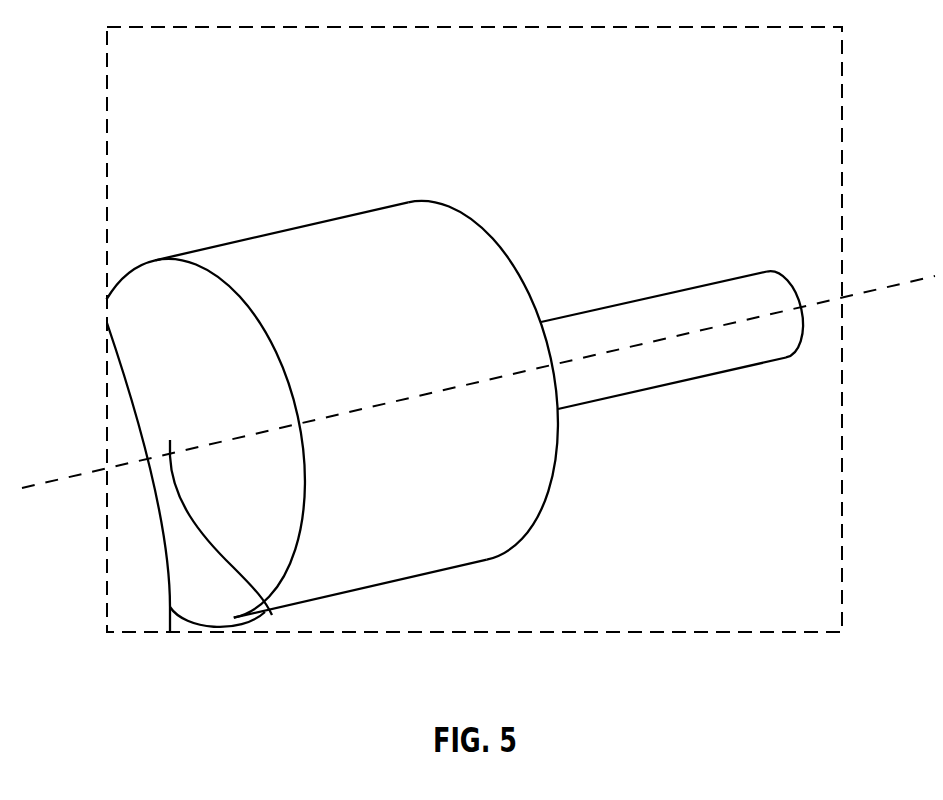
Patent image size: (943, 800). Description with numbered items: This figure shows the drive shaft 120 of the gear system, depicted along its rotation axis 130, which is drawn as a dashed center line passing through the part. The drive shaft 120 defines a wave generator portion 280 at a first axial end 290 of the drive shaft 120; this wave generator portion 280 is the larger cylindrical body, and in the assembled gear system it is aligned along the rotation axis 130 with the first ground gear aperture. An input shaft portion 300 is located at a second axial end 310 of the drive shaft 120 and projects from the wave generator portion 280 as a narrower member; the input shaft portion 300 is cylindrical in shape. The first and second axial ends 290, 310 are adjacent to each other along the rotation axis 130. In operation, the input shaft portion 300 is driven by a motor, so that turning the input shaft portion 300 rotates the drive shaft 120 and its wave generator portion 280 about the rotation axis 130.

The drive shaft 120 is at (292, 226).
The rotation axis 130 is at (68, 479).
The wave generator portion 280 is at (333, 587).
The first axial end 290 is at (272, 615).
The input shaft portion 300 is at (702, 285).
The second axial end 310 is at (790, 281).